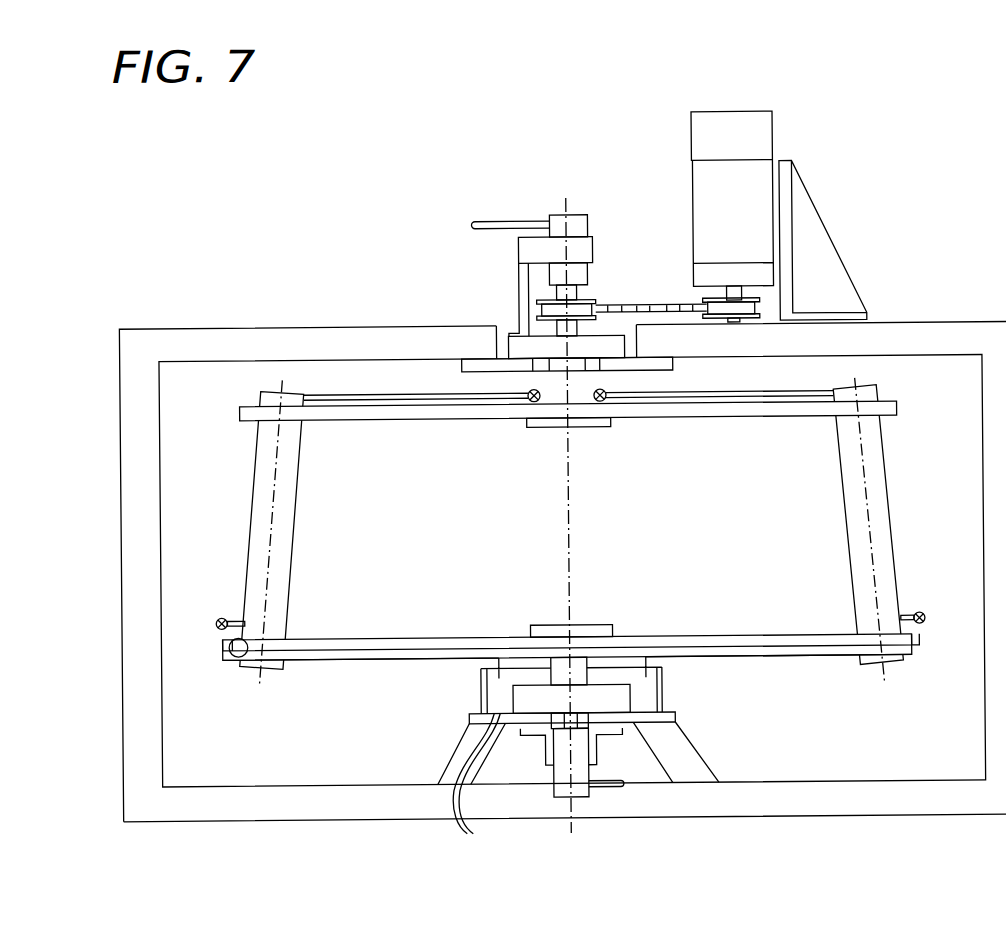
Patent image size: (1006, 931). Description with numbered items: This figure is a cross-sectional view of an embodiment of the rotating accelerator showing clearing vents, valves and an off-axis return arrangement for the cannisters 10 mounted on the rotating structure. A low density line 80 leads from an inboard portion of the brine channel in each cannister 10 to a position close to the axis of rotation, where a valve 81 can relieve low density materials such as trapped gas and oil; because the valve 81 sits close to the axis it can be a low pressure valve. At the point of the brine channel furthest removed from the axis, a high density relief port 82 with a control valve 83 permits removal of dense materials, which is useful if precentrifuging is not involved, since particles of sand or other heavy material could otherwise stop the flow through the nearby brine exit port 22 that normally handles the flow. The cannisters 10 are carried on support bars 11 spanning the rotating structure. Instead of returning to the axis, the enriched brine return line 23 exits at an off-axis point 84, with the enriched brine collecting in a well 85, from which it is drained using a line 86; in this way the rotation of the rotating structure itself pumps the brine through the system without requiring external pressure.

The cannister 10 is at (264, 508).
The support bar 11 is at (431, 414).
The brine exit port 22 is at (240, 660).
The enriched brine return line 23 is at (370, 658).
The low density line 80 is at (392, 393).
The valve 81 is at (530, 391).
The high density relief port 82 is at (236, 619).
The control valve 83 is at (216, 621).
The off-axis point 84 is at (497, 680).
The well 85 is at (650, 688).
The line 86 is at (473, 828).